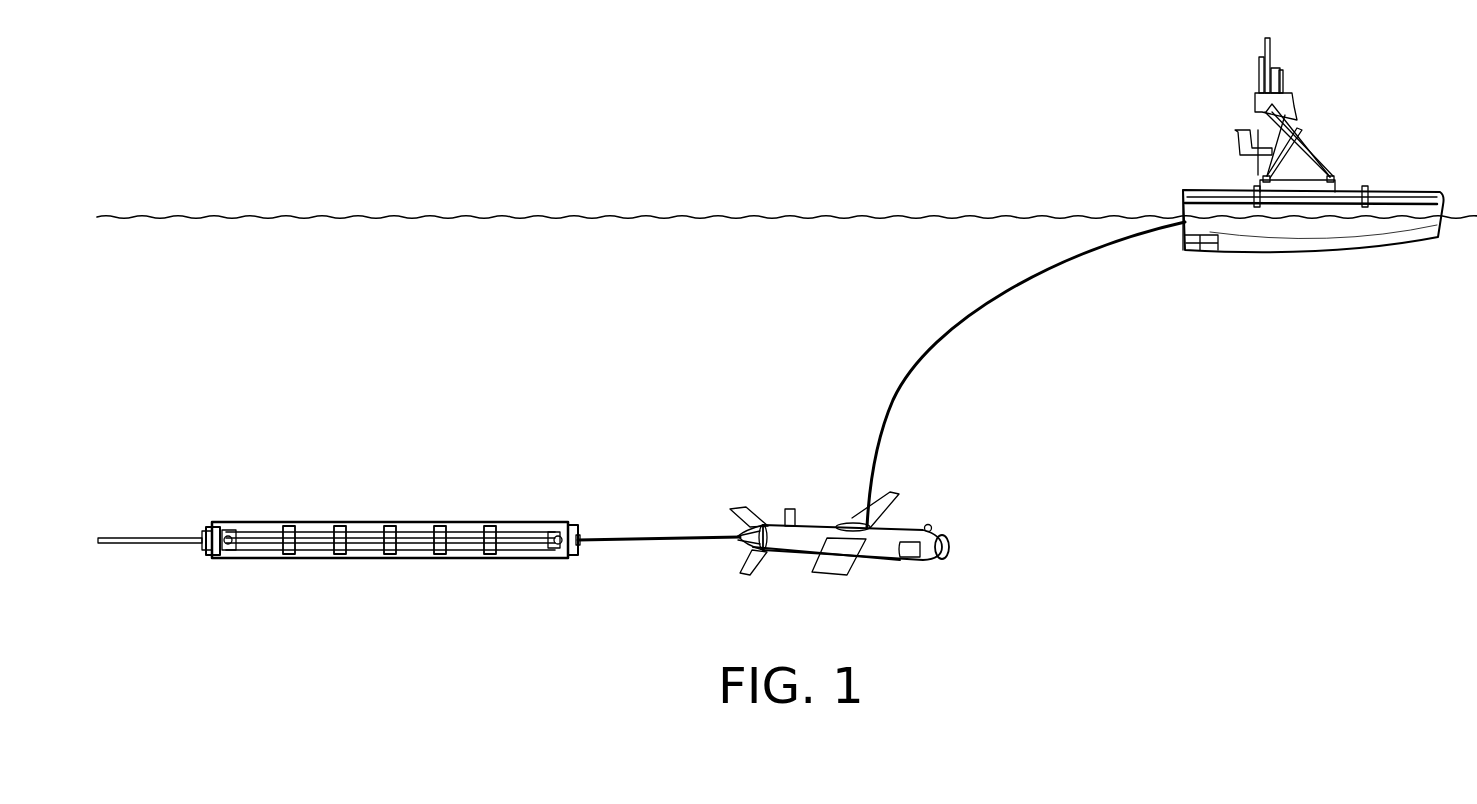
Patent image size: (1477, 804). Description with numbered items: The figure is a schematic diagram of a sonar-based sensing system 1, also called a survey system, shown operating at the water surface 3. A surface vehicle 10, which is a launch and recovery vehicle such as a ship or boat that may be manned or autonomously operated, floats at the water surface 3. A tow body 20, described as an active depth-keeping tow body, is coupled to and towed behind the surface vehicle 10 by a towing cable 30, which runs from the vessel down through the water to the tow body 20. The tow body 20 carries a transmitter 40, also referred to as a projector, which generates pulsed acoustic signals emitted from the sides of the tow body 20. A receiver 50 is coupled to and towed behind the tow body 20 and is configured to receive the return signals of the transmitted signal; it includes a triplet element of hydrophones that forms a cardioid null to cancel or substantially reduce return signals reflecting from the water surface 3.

The sonar-based sensing system 1 is at (704, 54).
The water surface 3 is at (433, 215).
The surface vehicle 10 is at (1401, 192).
The tow body 20 is at (820, 532).
The towing cable 30 is at (950, 327).
The transmitter 40 is at (913, 552).
The receiver 50 is at (365, 522).